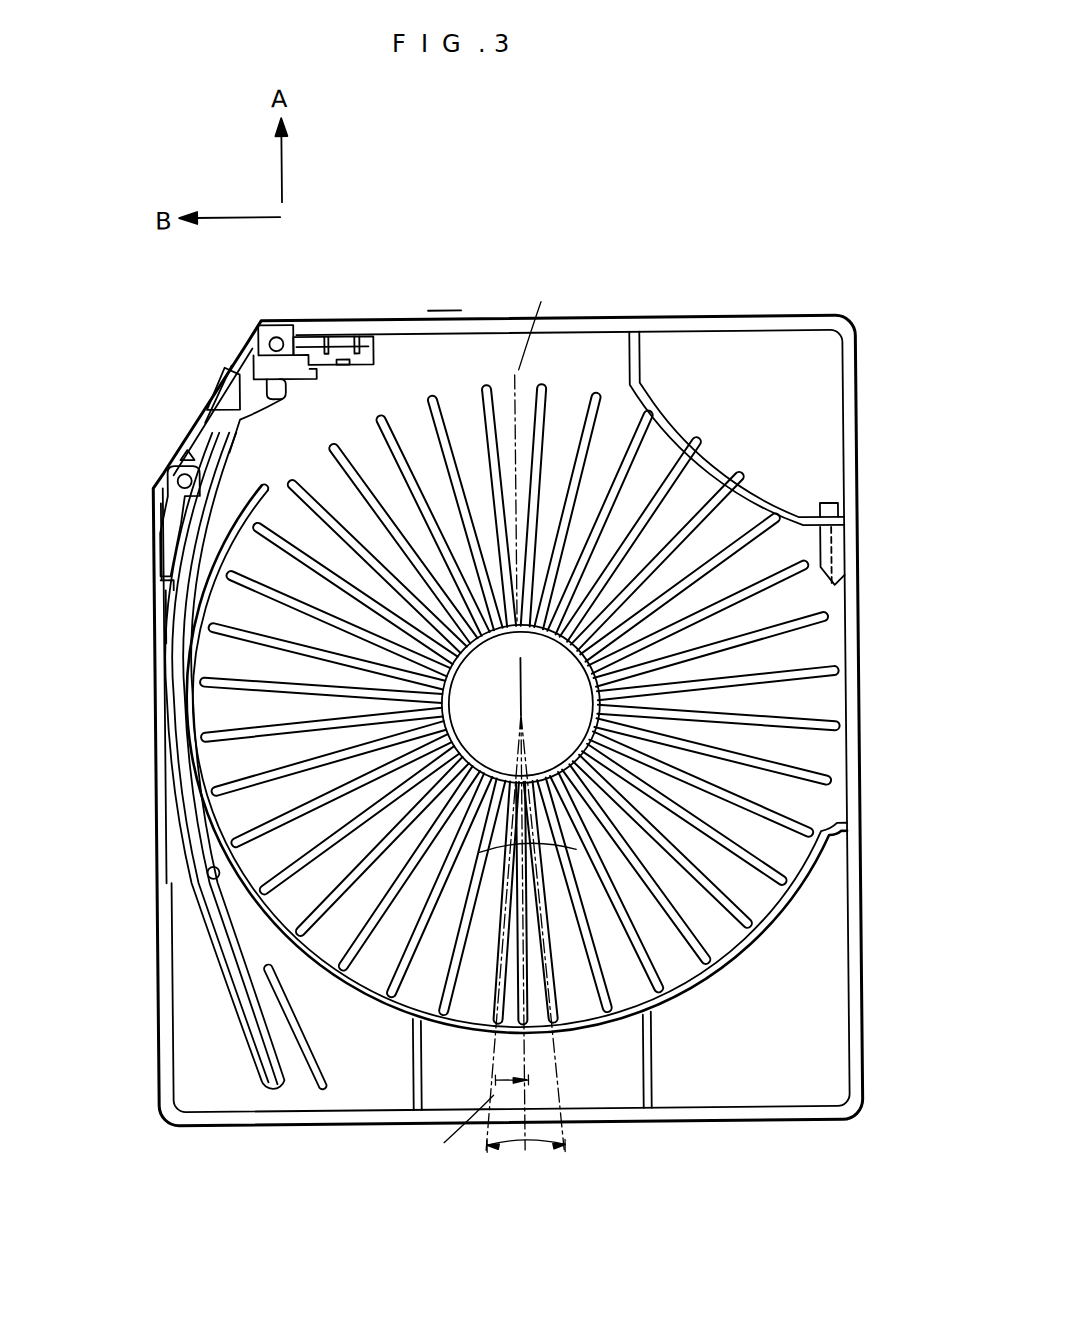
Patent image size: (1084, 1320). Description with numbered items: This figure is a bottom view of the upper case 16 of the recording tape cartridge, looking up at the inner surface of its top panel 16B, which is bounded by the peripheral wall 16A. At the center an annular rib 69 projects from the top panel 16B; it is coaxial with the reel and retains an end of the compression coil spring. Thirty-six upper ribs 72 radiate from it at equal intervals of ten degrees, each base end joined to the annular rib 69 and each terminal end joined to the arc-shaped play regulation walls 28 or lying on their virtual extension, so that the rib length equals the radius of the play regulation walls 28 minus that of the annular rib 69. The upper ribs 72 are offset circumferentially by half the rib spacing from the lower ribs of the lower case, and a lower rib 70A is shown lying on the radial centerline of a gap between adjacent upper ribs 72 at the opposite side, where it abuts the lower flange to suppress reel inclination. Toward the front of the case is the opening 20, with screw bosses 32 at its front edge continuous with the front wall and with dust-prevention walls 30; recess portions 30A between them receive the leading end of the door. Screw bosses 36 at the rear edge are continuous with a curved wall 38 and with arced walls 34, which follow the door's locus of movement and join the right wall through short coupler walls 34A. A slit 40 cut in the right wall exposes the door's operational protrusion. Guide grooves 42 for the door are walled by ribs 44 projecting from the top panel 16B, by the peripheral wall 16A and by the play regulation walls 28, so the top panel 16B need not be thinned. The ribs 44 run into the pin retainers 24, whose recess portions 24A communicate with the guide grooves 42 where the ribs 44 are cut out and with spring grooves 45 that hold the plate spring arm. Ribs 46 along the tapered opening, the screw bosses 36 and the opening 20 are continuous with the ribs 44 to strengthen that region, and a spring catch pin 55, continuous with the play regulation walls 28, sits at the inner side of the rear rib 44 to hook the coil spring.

The upper case 16 is at (703, 265).
The peripheral wall 16A is at (858, 812).
The top panel 16B is at (595, 1035).
The opening 20 is at (180, 445).
The pin retainer 24 is at (258, 414).
The recess portion 24A is at (289, 392).
The play regulation wall 28 is at (735, 445).
The dust-prevention wall 30 is at (257, 340).
The recess portion 30A is at (238, 356).
The screw boss 32 is at (284, 335).
The arced wall 34 is at (170, 565).
The coupler wall 34A is at (167, 590).
The screw boss 36 is at (170, 468).
The curved wall 38 is at (180, 490).
The slit 40 is at (163, 735).
The guide groove 42 is at (298, 350).
The rib 44 is at (232, 368).
The spring groove 45 is at (318, 372).
The rib 46 is at (187, 447).
The spring catch pin 55 is at (205, 876).
The annular rib 69 is at (552, 632).
The lower rib 70A is at (520, 968).
The upper rib 72 is at (560, 390).